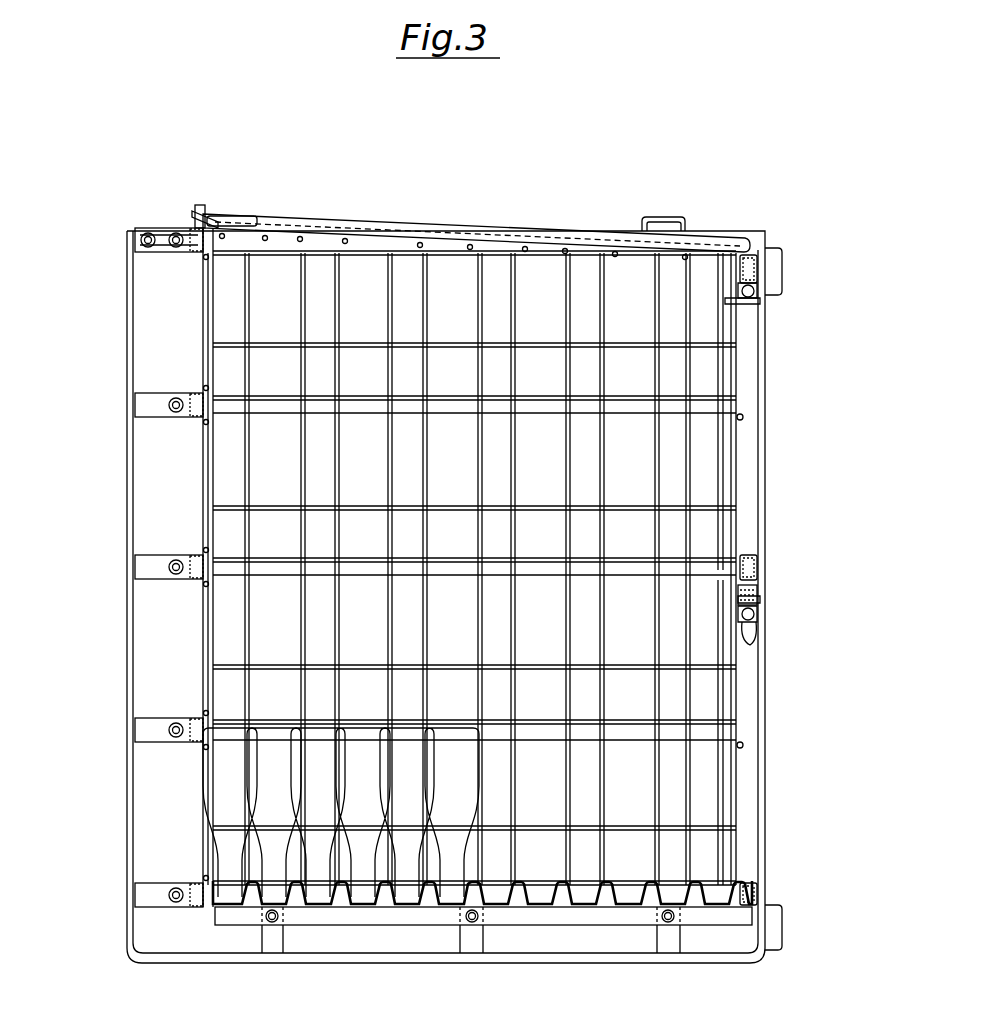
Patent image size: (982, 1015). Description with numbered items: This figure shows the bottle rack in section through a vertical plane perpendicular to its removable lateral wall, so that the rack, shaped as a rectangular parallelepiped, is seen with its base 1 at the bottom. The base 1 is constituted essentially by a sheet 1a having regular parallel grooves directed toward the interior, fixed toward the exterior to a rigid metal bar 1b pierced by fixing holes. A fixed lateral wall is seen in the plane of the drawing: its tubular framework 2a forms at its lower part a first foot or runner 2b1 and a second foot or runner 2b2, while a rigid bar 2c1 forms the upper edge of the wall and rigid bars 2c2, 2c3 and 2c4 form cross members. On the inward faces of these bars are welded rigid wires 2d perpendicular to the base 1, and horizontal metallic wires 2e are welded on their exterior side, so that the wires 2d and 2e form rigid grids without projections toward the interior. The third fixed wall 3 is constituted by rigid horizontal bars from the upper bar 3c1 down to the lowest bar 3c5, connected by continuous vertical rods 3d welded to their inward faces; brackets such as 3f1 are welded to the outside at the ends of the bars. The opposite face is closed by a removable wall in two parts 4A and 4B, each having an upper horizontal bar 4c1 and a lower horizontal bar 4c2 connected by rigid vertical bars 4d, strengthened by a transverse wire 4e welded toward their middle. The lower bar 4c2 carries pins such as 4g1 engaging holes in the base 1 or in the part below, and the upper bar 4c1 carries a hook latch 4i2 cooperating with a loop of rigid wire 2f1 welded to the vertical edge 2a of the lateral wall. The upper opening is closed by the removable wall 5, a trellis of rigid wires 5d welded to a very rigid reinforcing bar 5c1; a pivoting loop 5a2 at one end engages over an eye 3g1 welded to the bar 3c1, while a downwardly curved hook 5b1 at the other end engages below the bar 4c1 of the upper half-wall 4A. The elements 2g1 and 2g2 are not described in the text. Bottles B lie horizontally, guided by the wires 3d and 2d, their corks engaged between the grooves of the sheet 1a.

The base 1 is at (400, 905).
The sheet 1a is at (520, 895).
The rigid bar 1b is at (312, 916).
The tubular framework 2a is at (764, 505).
The first foot or runner 2b1 is at (567, 960).
The second foot or runner 2b2 is at (128, 345).
The rigid bar 2c1 is at (405, 245).
The rigid bar 2c2 is at (450, 405).
The rigid bar 2c3 is at (442, 572).
The rigid bar 2c4 is at (520, 738).
The rigid wires 2d is at (610, 300).
The metallic wires 2e is at (275, 340).
The loop of rigid wire 2f1 is at (745, 302).
The handle 2g1 is at (662, 220).
The handle plate 2g2 is at (243, 215).
The third fixed wall 3 is at (205, 525).
The rigid horizontal bar 3c1 is at (185, 230).
The rigid horizontal bar 3c5 is at (195, 880).
The vertical metallic rods 3d is at (205, 640).
The bracket 3f1 is at (165, 248).
The eye 3g1 is at (203, 206).
The upper part of removable lateral wall 4A is at (740, 456).
The lower part of removable lateral wall 4B is at (740, 797).
The horizontal bar 4c1 is at (742, 268).
The horizontal bar 4c2 is at (756, 560).
The rigid vertical bars 4d is at (740, 702).
The transverse wire 4e is at (742, 417).
The pin 4g1 is at (756, 590).
The hook latch 4i2 is at (752, 282).
The removable wall 5 is at (462, 225).
The pivoting loop 5a2 is at (200, 213).
The hook 5b1 is at (760, 290).
The rigid metal bar 5c1 is at (572, 298).
The rigid metal wires 5d is at (345, 236).
The bottle B is at (410, 745).